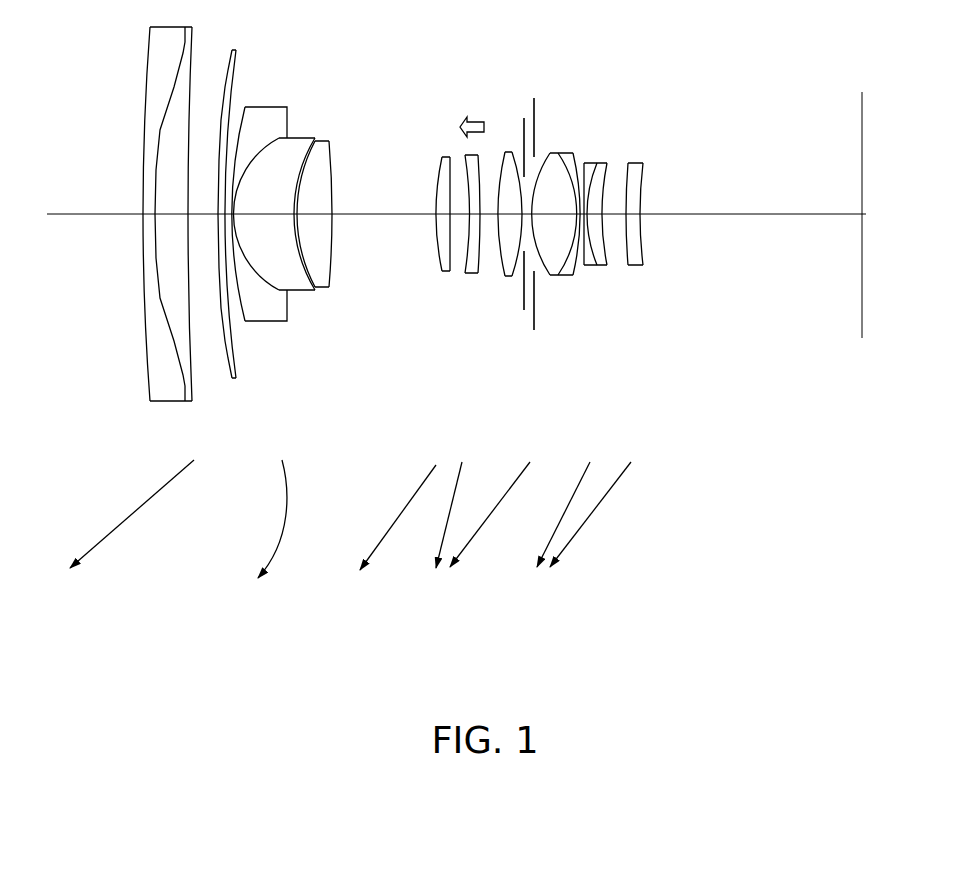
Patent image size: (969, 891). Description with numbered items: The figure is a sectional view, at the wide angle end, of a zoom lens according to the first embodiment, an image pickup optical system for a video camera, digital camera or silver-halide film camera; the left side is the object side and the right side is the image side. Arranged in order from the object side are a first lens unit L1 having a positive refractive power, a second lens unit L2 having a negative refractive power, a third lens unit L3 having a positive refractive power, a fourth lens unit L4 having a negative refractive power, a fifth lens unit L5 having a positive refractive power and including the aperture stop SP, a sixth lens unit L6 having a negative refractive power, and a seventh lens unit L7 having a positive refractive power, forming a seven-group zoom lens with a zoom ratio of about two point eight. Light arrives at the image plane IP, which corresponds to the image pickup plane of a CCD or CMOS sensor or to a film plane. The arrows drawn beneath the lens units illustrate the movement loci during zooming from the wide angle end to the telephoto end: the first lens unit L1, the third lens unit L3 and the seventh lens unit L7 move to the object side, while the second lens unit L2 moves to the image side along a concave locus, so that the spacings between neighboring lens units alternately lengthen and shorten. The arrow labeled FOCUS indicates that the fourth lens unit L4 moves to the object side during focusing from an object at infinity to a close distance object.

The first lens unit L1 is at (152, 427).
The second lens unit L2 is at (337, 381).
The third lens unit L3 is at (428, 350).
The fourth lens unit L4 is at (462, 350).
The fifth lens unit L5 is at (572, 350).
The sixth lens unit L6 is at (587, 350).
The seventh lens unit L7 is at (623, 350).
The aperture stop SP is at (531, 110).
The image plane IP is at (857, 111).
The focusing direction arrow FOCUS is at (468, 112).